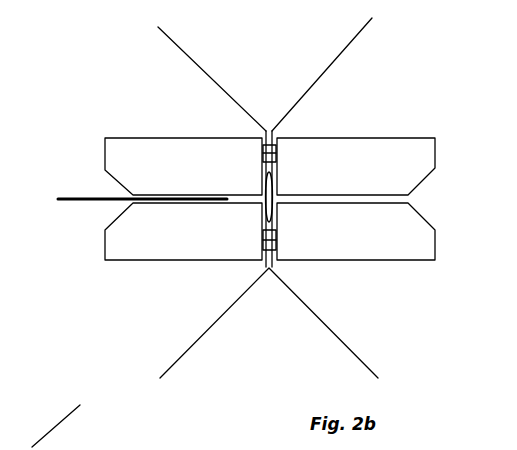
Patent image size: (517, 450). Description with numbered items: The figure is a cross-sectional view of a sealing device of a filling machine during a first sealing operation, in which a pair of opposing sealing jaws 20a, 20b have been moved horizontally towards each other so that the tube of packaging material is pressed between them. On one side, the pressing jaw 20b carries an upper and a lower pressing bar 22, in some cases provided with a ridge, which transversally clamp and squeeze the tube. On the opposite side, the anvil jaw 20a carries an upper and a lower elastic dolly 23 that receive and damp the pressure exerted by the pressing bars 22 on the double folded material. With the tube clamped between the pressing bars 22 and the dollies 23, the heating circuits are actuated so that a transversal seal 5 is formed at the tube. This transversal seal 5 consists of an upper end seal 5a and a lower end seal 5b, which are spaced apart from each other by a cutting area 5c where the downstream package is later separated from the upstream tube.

The transversal seal 5 is at (246, 166).
The upper end seal 5a is at (287, 153).
The lower end seal 5b is at (276, 240).
The cutting area 5c is at (273, 200).
The anvil jaw 20a is at (417, 126).
The pressing jaw 20b is at (103, 126).
The pressing bar 22 is at (263, 146).
The elastic dolly 23 is at (282, 150).